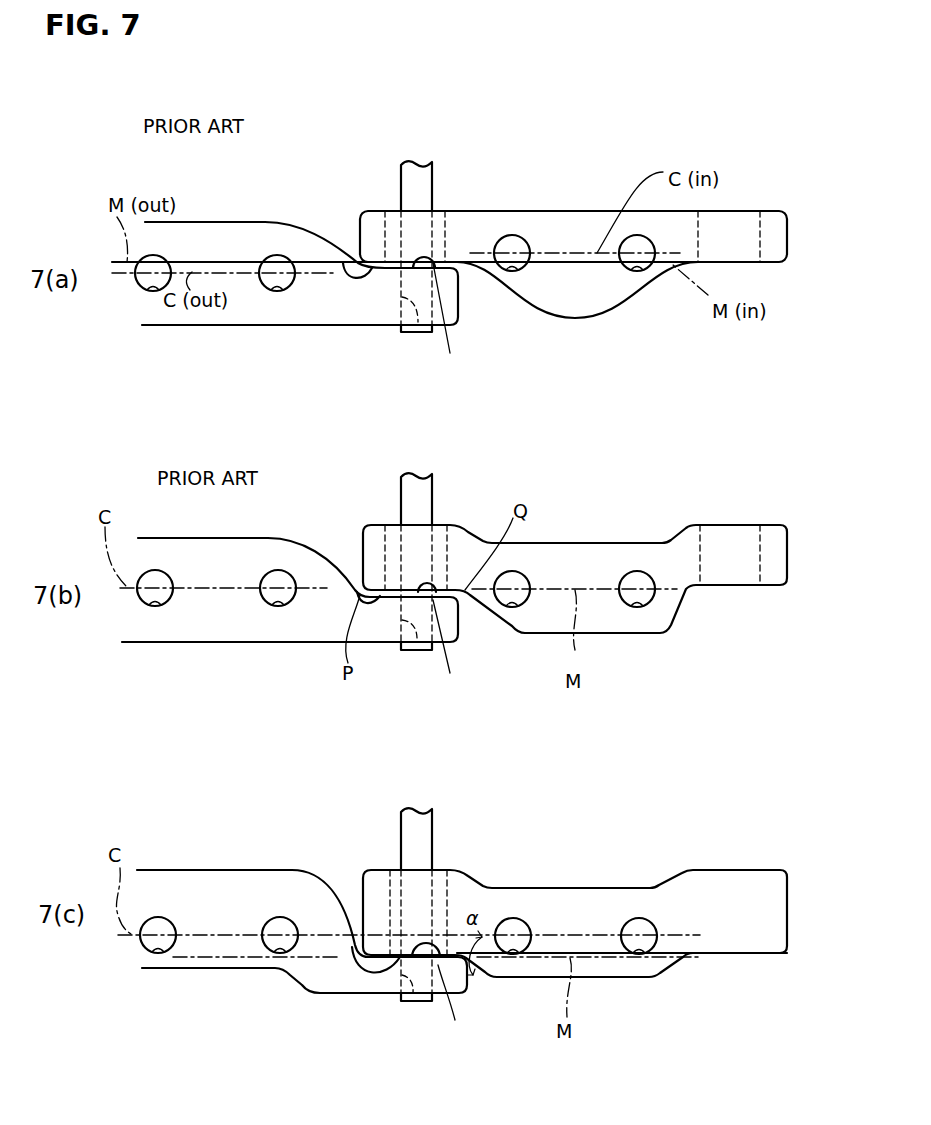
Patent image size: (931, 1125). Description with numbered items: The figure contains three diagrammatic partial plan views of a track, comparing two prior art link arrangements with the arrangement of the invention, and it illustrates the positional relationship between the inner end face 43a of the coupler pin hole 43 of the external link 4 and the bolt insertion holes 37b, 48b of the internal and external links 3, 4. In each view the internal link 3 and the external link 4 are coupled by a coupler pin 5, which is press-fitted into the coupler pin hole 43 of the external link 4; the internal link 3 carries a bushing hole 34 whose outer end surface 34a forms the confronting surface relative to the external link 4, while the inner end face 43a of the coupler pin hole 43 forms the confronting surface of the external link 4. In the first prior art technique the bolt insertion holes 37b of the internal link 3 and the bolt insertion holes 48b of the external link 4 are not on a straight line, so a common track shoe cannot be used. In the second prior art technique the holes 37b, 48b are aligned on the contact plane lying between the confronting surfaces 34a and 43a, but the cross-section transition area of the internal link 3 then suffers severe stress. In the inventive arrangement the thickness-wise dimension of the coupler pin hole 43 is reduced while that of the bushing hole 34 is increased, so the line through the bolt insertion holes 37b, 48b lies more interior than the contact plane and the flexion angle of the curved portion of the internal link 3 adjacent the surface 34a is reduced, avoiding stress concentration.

The internal link 3 is at (573, 222).
The external link 4 is at (237, 242).
The coupler pin 5 is at (433, 177).
The bushing hole 34 is at (390, 235).
The confronting surface of the internal link 34a is at (348, 262).
The bolt insertion hole of the internal link 37b is at (513, 271).
The coupler pin hole 43 is at (420, 335).
The inner end face of the coupler pin hole 43a is at (455, 656).
The bolt insertion hole of the external link 48b is at (153, 291).